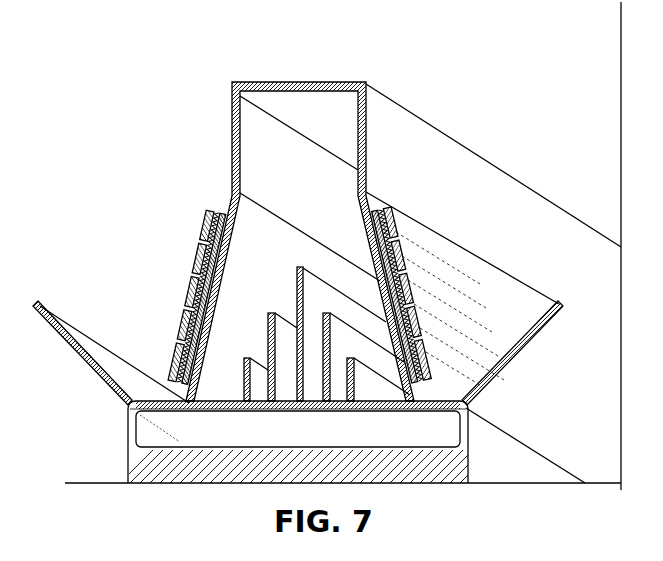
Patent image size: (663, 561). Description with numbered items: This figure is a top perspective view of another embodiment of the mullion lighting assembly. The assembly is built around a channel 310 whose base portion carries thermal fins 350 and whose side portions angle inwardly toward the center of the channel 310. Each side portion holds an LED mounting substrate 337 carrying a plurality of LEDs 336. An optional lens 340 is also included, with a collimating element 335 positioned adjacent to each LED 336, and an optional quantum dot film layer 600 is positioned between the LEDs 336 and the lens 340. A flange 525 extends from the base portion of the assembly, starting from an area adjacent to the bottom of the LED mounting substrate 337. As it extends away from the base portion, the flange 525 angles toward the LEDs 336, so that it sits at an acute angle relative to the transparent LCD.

The channel 310 is at (292, 241).
The lens 340 is at (225, 208).
The quantum dot film layer 600 is at (307, 286).
The collimating element 335 is at (204, 298).
The LED 336 is at (198, 297).
The LED mounting substrate 337 is at (212, 212).
The thermal fins 350 is at (297, 292).
The flange 525 is at (579, 377).